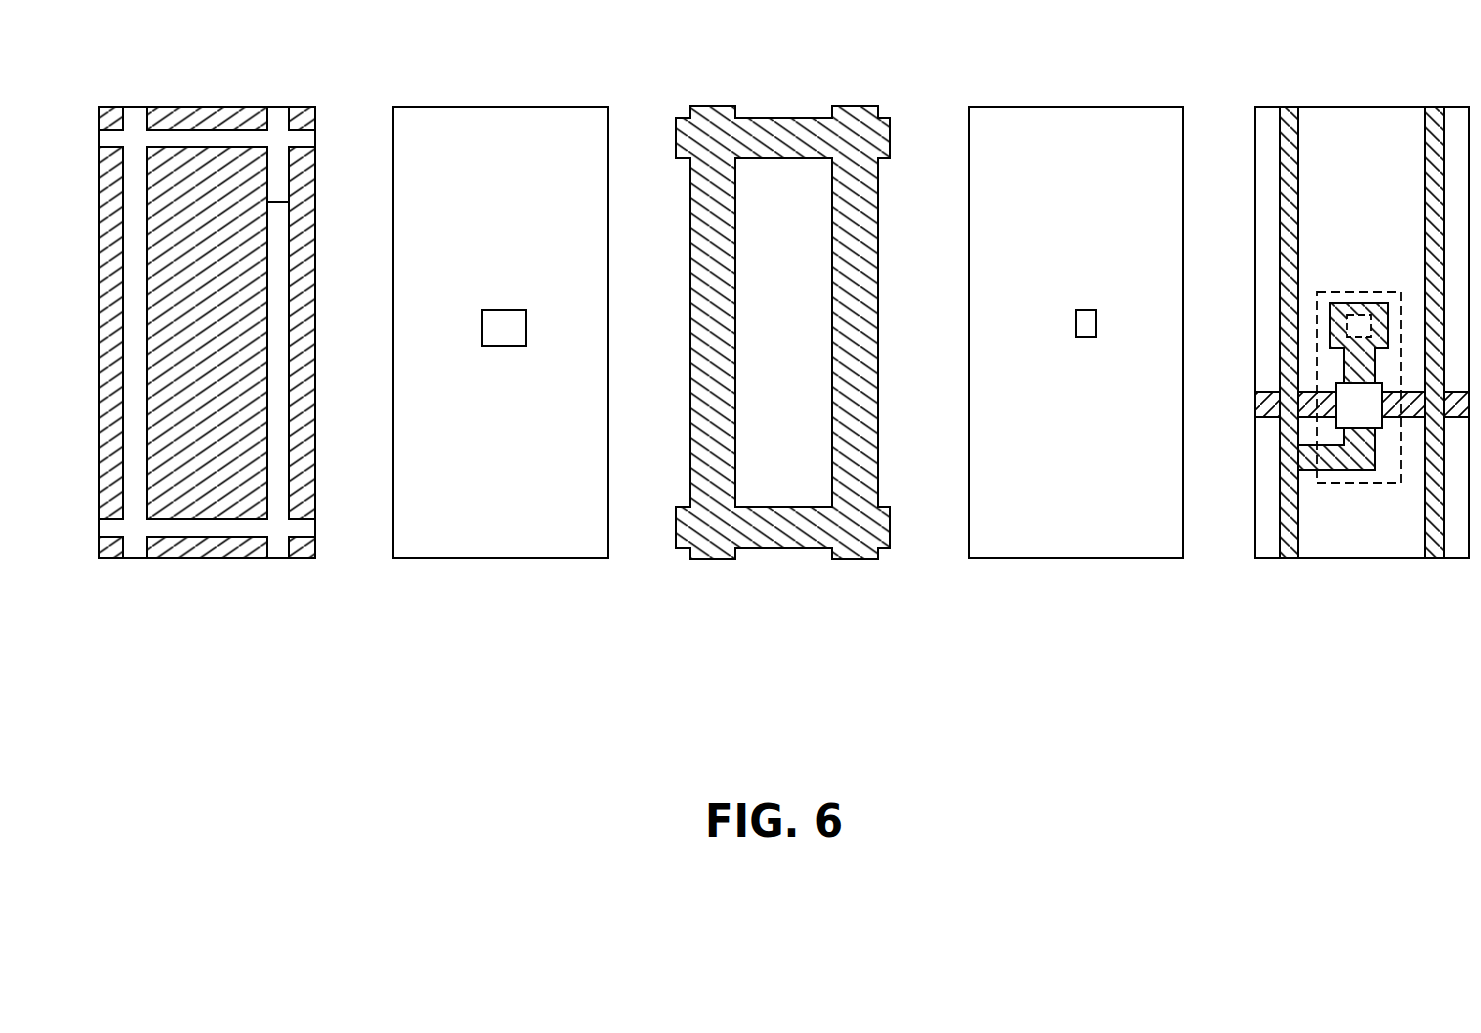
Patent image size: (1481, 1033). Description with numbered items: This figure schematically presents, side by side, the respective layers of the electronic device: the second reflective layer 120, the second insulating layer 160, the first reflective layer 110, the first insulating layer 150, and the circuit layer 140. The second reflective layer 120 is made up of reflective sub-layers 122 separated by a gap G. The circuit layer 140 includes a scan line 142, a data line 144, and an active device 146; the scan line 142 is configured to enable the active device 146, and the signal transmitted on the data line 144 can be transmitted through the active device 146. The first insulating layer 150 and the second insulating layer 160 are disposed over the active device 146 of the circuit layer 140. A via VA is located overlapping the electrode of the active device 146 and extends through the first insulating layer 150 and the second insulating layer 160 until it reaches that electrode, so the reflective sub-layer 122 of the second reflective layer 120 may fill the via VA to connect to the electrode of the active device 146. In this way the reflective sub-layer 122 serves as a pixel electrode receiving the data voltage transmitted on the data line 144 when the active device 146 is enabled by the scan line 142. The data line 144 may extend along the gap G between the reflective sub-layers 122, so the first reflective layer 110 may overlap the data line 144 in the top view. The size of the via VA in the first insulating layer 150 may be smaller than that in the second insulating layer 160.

The first reflective layer 110 is at (880, 650).
The second reflective layer 120 is at (307, 649).
The reflective sub-layer 122 is at (208, 490).
The gap G is at (278, 202).
The second insulating layer 160 is at (600, 649).
The via VA is at (505, 310).
The first insulating layer 150 is at (1176, 649).
The circuit layer 140 is at (1462, 650).
The scan line 142 is at (1410, 405).
The data line 144 is at (1292, 120).
The active device 146 is at (1345, 483).